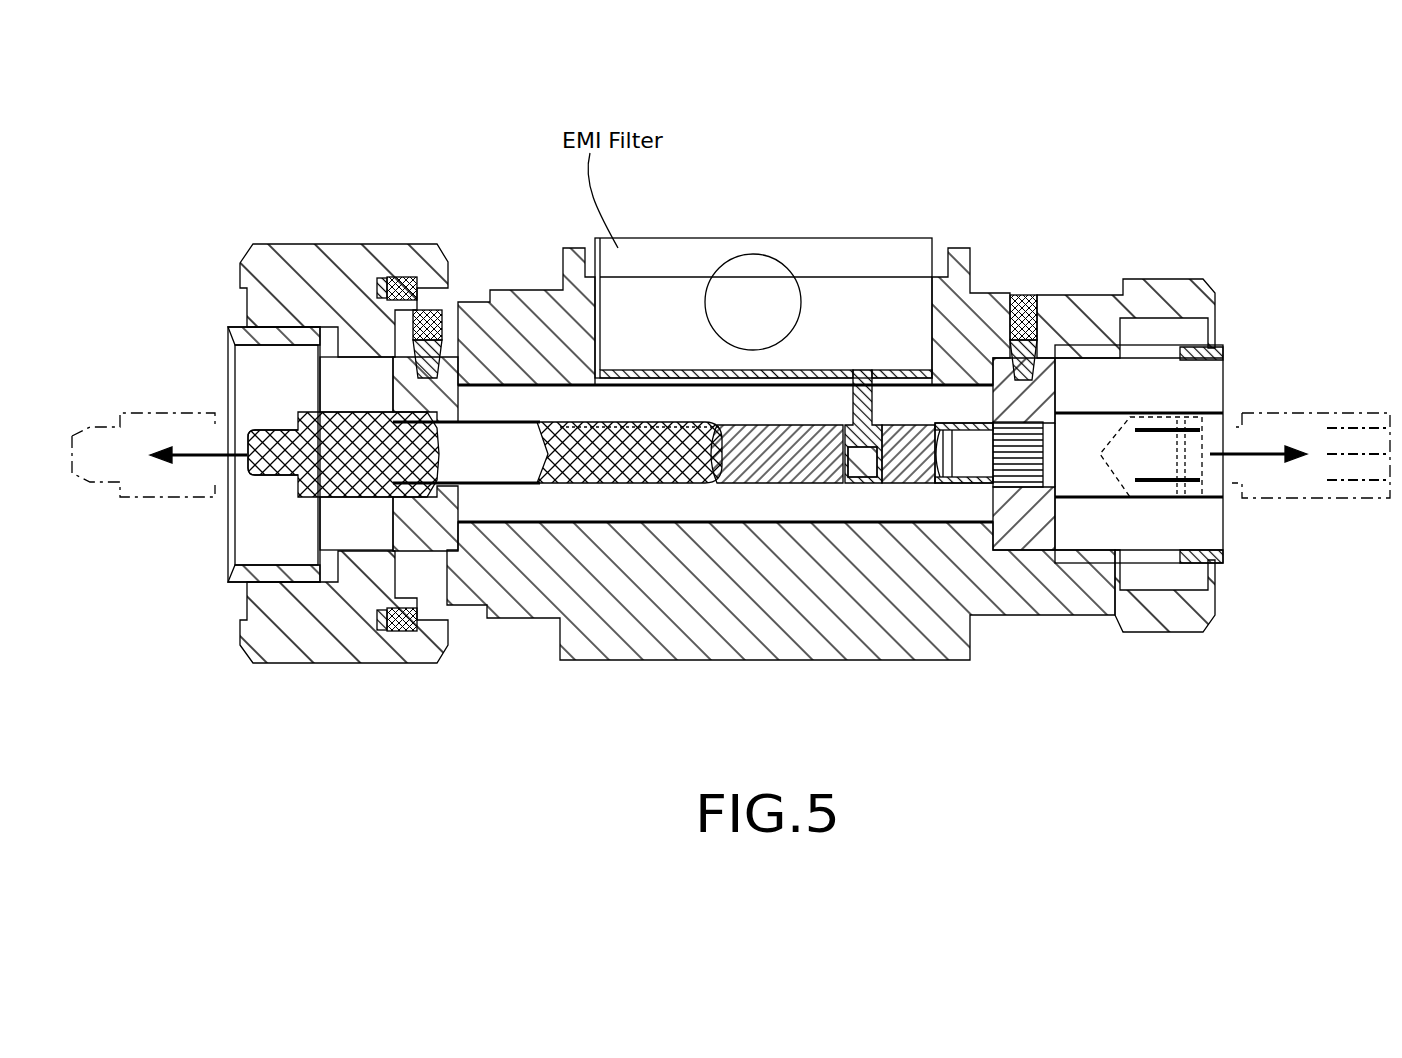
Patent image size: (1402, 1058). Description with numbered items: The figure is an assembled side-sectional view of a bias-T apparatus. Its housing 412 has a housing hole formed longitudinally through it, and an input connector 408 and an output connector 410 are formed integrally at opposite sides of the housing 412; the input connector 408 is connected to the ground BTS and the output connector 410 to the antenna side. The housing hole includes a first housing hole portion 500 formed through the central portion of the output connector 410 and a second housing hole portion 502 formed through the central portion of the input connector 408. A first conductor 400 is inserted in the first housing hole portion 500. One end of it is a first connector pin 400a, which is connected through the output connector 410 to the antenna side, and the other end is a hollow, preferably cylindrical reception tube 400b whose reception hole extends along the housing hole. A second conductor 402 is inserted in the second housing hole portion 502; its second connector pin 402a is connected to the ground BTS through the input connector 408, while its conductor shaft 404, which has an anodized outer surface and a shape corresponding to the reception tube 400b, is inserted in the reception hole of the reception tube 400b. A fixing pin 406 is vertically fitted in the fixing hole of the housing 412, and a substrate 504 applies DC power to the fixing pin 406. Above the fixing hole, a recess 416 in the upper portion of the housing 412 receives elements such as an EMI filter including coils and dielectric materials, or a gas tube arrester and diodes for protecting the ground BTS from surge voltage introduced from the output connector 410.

The first conductor 400 is at (852, 317).
The first connector pin 400a is at (1203, 488).
The reception tube 400b is at (770, 447).
The second conductor 402 is at (280, 450).
The second connector pin 402a is at (247, 468).
The conductor shaft 404 is at (643, 427).
The fixing pin 406 is at (867, 373).
The input connector 408 is at (292, 308).
The output connector 410 is at (1093, 323).
The housing 412 is at (695, 182).
The recess 416 is at (917, 307).
The first housing hole portion 500 is at (1058, 470).
The second housing hole portion 502 is at (447, 430).
The substrate 504 is at (712, 370).